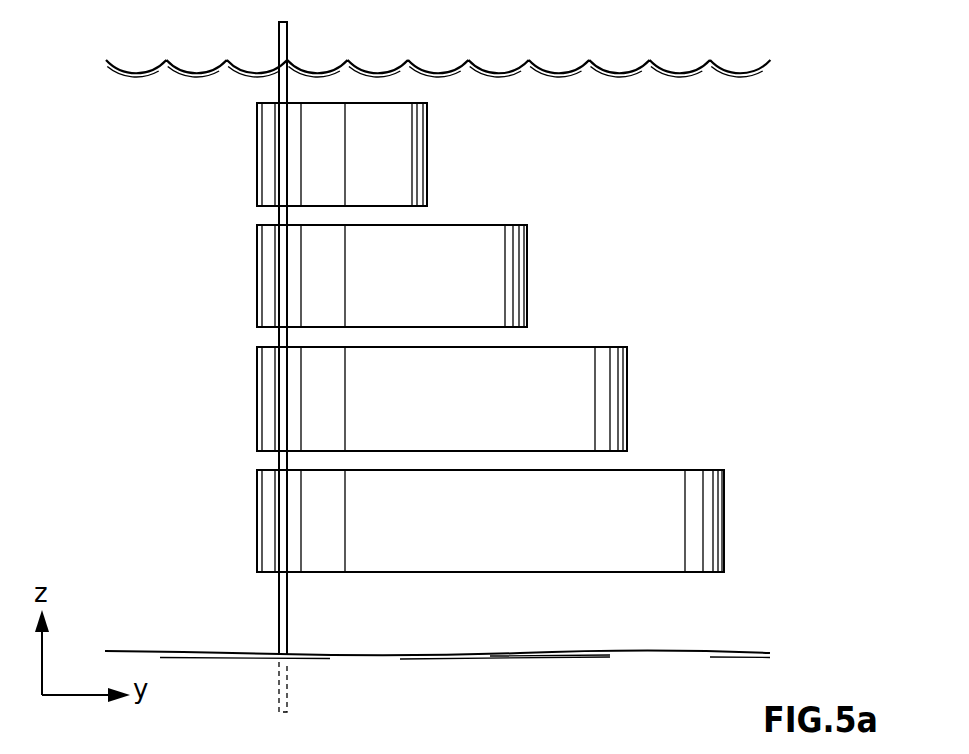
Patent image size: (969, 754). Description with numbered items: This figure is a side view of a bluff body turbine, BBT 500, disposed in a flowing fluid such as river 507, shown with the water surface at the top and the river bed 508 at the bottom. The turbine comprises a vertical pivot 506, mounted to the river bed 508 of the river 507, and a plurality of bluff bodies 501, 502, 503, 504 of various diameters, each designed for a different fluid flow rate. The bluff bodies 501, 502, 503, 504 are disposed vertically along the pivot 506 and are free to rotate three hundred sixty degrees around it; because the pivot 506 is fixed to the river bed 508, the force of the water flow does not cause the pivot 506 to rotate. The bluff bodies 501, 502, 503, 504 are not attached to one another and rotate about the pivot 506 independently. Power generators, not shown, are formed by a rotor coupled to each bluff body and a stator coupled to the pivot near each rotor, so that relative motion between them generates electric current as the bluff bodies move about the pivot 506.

The bluff body turbine 500 is at (466, 361).
The bluff body 501 is at (427, 152).
The bluff body 502 is at (527, 270).
The bluff body 503 is at (627, 390).
The bluff body 504 is at (724, 515).
The pivot 506 is at (288, 45).
The river 507 is at (223, 140).
The river bed 508 is at (223, 704).